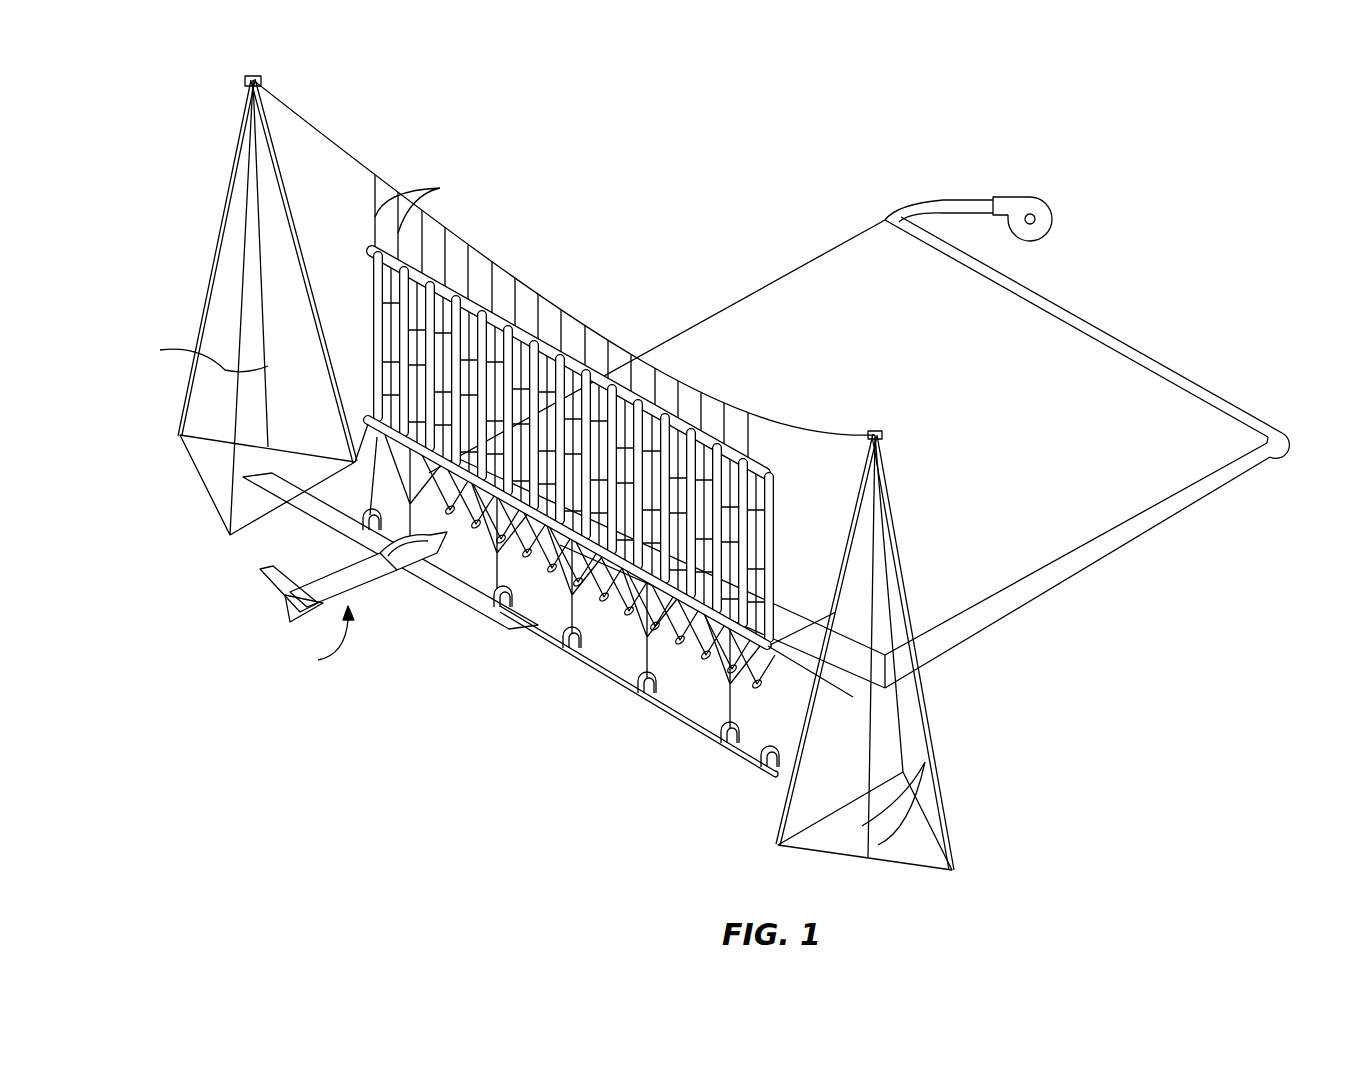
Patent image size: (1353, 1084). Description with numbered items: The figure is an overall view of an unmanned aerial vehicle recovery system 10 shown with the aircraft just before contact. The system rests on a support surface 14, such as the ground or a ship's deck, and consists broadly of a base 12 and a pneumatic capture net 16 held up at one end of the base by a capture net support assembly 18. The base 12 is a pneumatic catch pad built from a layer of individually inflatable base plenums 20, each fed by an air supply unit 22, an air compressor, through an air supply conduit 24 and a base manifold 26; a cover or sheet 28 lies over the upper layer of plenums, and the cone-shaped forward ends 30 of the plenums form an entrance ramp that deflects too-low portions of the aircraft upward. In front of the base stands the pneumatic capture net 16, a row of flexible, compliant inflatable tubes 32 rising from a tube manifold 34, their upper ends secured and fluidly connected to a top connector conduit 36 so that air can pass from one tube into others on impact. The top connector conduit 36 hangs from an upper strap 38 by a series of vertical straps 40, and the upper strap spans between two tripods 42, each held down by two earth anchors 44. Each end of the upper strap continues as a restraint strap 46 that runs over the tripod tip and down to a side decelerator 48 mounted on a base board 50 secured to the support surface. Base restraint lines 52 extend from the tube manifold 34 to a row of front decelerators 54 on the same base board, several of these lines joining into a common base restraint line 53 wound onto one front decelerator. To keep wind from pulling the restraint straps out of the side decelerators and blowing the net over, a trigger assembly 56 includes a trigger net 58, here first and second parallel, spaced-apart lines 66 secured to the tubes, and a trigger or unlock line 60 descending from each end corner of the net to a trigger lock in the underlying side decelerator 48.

The UAV recovery system 10 is at (697, 473).
The base 12 is at (859, 426).
The support surface 14 is at (1032, 674).
The pneumatic capture net 16 is at (564, 362).
The capture net support assembly 18 is at (563, 460).
The base plenum 20 is at (1118, 537).
The air supply unit 22 is at (1028, 233).
The air supply conduit 24 is at (952, 203).
The base manifold 26 is at (1182, 376).
The cover or sheet 28 is at (1177, 467).
The forward ends of base plenums 30 is at (842, 690).
The inflatable tubes 32 is at (393, 338).
The tube manifold 34 is at (368, 412).
The top connector conduit 36 is at (365, 255).
The upper strap 38 is at (350, 160).
The vertical straps 40 is at (470, 191).
The tripod 42 is at (207, 288).
The earth anchors 44 is at (162, 350).
The restraint strap 46 is at (352, 472).
The side decelerator 48 is at (770, 775).
The base board 50 is at (580, 657).
The base restraint lines 52 is at (727, 668).
The common base restraint line 53 is at (575, 618).
The front decelerators 54 is at (700, 735).
The trigger assembly 56 is at (799, 480).
The trigger net 58 is at (778, 528).
The trigger or unlock line 60 is at (732, 755).
The first and second lines 66 is at (708, 515).